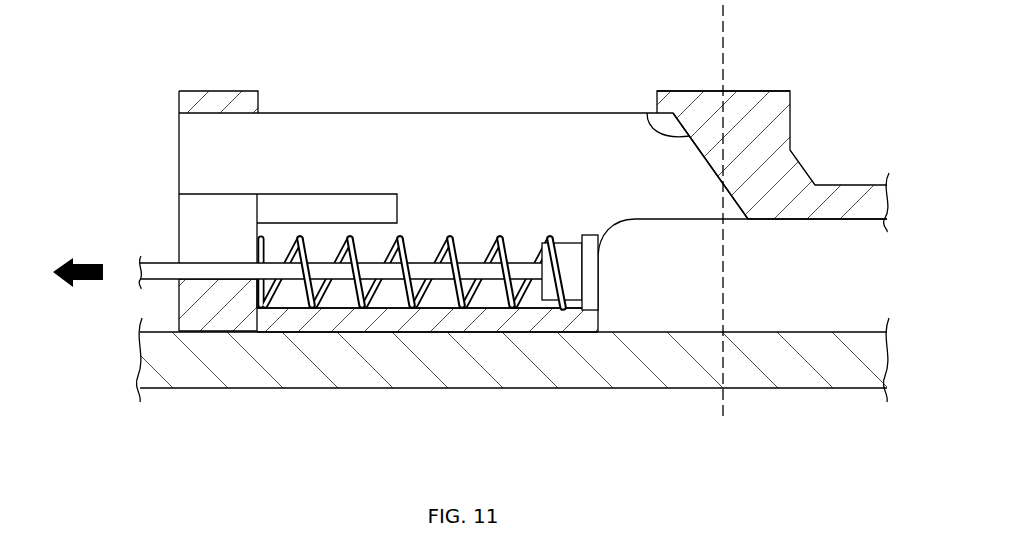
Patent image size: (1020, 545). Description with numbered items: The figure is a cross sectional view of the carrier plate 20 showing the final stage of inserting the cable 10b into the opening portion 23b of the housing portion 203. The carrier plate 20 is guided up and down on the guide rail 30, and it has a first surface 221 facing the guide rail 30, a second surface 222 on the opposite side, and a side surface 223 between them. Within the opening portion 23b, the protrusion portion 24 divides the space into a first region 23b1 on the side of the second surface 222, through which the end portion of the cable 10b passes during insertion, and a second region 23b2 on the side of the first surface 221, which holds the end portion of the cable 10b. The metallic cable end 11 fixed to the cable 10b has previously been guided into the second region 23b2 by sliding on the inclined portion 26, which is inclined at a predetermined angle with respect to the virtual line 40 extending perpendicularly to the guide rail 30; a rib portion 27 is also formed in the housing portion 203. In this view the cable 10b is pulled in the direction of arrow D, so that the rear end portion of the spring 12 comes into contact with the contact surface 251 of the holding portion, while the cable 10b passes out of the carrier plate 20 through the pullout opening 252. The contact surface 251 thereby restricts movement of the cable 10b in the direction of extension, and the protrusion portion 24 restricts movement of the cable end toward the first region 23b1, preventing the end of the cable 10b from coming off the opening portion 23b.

The cable 10b is at (393, 272).
The cable end 11 is at (592, 283).
The spring 12 is at (360, 341).
The carrier plate 20 is at (800, 160).
The housing portion 203 is at (218, 102).
The first surface 221 is at (476, 339).
The second surface 222 is at (773, 88).
The side surface 223 is at (172, 308).
The opening portion 23b is at (592, 172).
The first region 23b1 is at (504, 136).
The second region 23b2 is at (297, 296).
The protrusion portion 24 is at (360, 207).
The contact surface 251 is at (262, 226).
The pullout opening 252 is at (200, 213).
The inclined portion 26 is at (646, 112).
The rib portion 27 is at (733, 100).
The guide rail 30 is at (830, 365).
The virtual line 40 is at (725, 24).
The arrow D is at (88, 261).